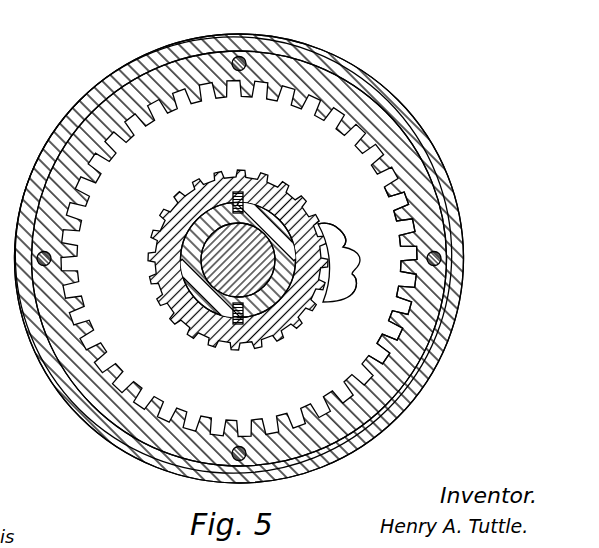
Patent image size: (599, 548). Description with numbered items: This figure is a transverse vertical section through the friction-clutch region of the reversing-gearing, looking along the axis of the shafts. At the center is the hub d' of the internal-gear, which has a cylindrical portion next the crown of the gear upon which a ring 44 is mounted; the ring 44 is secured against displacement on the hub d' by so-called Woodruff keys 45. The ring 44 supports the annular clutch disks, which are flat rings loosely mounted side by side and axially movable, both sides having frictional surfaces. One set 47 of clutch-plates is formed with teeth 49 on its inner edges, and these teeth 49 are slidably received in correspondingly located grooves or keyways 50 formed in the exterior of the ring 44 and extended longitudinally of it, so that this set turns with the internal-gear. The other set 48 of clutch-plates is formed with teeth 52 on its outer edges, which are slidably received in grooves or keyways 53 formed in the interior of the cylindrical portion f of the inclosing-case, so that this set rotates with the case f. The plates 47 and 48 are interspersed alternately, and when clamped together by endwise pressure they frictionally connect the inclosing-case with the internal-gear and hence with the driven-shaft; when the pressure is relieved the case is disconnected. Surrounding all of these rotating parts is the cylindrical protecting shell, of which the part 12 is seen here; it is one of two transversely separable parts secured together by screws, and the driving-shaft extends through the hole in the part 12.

The set of clutch-plates 48 is at (327, 150).
The cylindrical portion of the inclosing-case f is at (417, 128).
The set of clutch-plates 47 is at (335, 250).
The grooves or keyways 53 is at (460, 228).
The part of the protecting shell 12 is at (458, 288).
The teeth 52 is at (403, 326).
The teeth 49 is at (350, 280).
The grooves or keyways 50 is at (336, 250).
The ring 44 is at (283, 210).
The Woodruff keys 45 is at (245, 185).
The hub d' is at (238, 233).
The shaft c is at (210, 266).